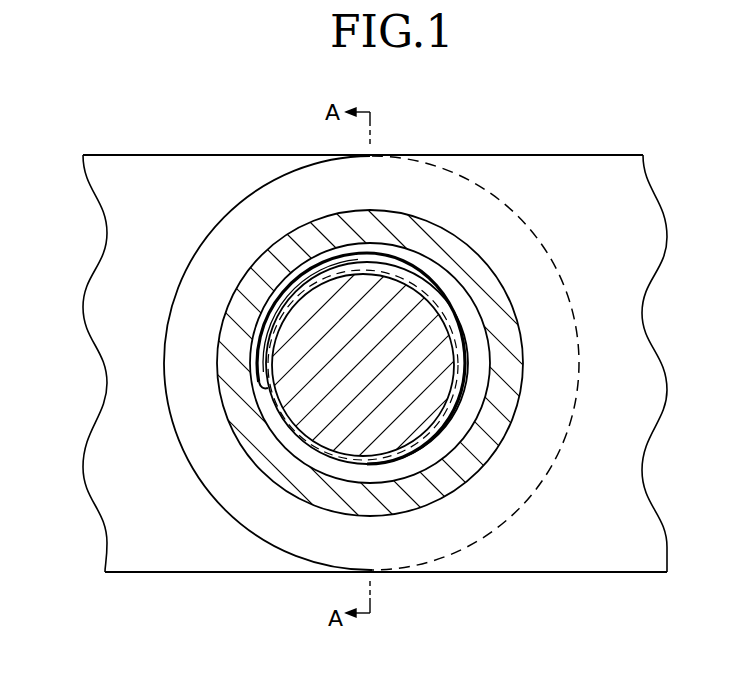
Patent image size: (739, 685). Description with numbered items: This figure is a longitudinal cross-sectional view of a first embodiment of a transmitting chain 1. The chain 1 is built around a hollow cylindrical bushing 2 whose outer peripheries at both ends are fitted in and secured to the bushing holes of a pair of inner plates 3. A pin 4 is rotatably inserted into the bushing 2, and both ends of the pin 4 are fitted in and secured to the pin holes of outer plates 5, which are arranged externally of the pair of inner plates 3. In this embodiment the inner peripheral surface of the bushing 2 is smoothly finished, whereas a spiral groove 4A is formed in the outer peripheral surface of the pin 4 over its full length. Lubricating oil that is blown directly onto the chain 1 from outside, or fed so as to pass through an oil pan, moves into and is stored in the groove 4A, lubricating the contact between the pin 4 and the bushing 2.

The transmitting chain 1 is at (556, 152).
The hollow cylindrical bushing 2 is at (487, 283).
The inner plate 3 is at (530, 172).
The pin 4 is at (303, 414).
The spiral groove 4A is at (445, 423).
The outer plate 5 is at (175, 175).